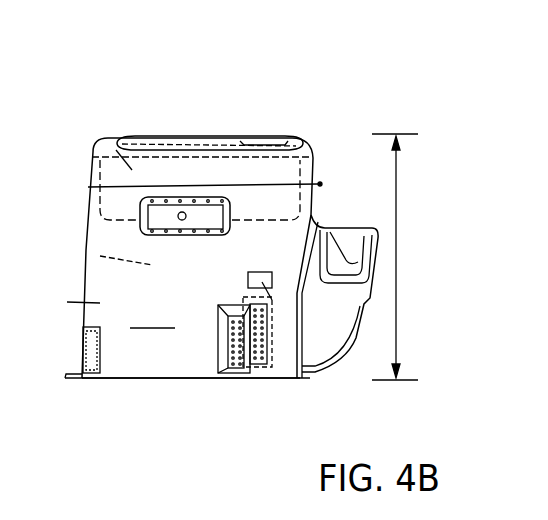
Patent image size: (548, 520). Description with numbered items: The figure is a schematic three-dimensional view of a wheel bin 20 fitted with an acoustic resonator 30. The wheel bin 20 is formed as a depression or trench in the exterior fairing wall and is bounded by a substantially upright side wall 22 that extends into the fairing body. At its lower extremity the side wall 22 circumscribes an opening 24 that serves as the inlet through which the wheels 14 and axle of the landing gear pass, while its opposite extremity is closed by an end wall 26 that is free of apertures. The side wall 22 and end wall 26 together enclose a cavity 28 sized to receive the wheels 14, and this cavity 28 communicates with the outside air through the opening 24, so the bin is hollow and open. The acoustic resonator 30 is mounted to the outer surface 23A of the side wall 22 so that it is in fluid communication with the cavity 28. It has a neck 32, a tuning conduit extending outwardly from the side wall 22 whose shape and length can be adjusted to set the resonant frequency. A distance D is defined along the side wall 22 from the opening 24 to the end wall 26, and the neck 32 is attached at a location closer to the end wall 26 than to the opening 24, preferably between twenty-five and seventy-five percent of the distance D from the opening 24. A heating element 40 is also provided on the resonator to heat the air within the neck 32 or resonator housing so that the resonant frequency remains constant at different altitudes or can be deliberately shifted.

The wheel 14 is at (115, 140).
The wheel bin 20 is at (323, 113).
The side wall 22 is at (67, 302).
The outer surface 23A is at (153, 311).
The opening 24 is at (131, 388).
The end wall 26 is at (153, 137).
The cavity 28 is at (100, 256).
The acoustic resonator 30 is at (136, 211).
The neck 32 is at (189, 211).
The heating element 40 is at (267, 367).
The distance D is at (395, 257).